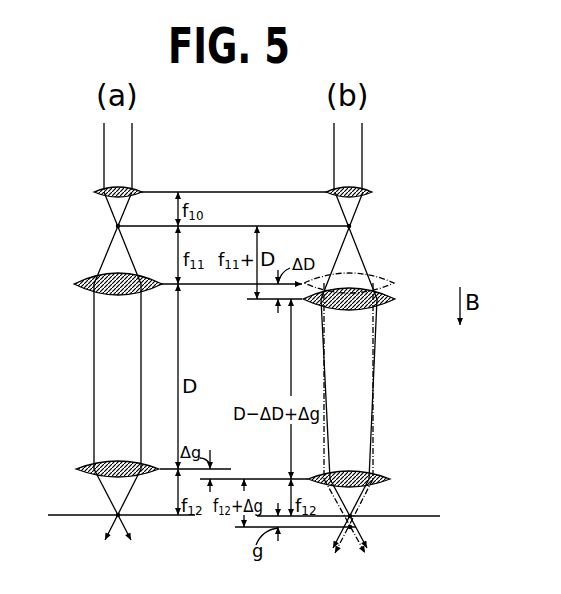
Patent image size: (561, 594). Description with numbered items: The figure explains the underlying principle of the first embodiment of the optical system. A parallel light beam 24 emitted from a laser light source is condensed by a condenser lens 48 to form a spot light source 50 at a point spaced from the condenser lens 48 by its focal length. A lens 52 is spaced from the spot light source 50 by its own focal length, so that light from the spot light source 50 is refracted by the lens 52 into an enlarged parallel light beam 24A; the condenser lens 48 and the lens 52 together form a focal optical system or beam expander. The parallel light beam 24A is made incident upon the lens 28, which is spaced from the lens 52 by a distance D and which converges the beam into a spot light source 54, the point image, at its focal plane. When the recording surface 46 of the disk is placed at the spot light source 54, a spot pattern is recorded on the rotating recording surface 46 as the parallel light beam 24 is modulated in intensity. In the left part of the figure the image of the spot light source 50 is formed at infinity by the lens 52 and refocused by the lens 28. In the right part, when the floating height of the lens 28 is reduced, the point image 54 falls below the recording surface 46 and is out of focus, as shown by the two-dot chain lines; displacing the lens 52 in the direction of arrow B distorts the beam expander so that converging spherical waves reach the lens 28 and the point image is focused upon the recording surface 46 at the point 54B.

The parallel light beam 24 is at (104, 140).
The parallel light beam 24A is at (94, 353).
The lens 28 is at (84, 469).
The recording surface 46 is at (50, 515).
The condenser lens 48 is at (96, 192).
The spot light source 50 is at (117, 226).
The lens 52 is at (82, 284).
The spot light source 54 is at (115, 513).
The point image position 54B is at (352, 516).